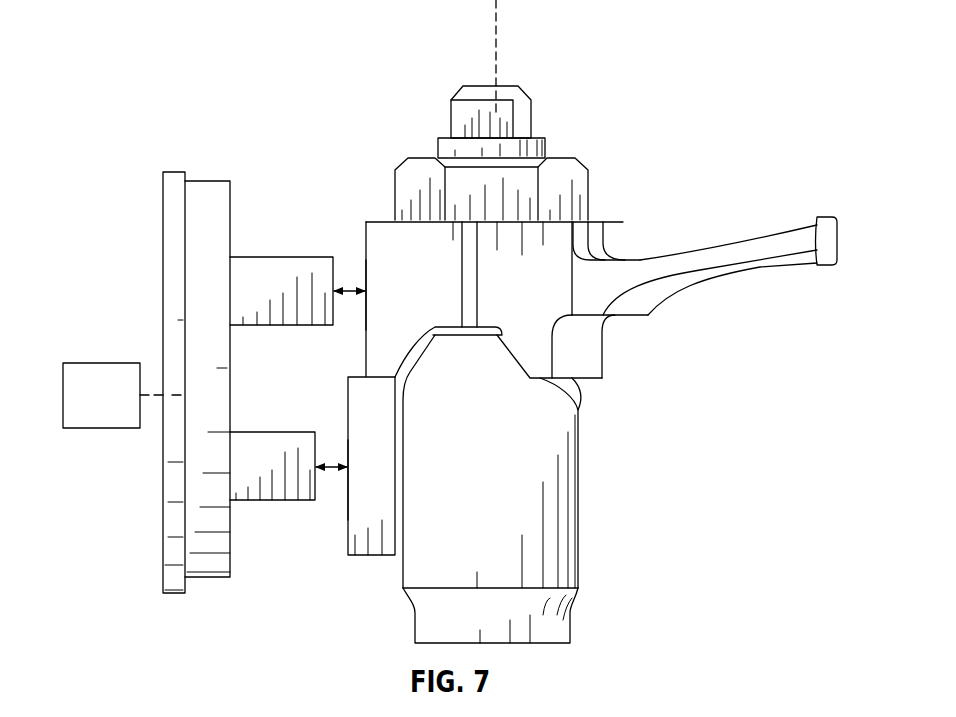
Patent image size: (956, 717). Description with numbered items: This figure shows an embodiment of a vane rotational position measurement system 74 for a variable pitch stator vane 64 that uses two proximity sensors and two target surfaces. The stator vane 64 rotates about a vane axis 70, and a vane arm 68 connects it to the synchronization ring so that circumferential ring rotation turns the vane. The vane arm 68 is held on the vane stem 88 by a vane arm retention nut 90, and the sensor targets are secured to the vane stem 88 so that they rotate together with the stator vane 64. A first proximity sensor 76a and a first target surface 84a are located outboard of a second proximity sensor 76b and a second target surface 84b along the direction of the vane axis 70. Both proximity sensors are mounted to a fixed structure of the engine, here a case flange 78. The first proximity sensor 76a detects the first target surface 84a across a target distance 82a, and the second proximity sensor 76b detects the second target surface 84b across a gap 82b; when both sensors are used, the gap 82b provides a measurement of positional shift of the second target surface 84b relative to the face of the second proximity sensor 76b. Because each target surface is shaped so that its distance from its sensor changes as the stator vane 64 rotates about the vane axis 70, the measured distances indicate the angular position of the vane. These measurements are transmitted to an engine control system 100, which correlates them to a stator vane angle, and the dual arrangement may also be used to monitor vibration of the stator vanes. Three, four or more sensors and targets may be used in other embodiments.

The stator vane 64 is at (570, 543).
The vane arm 68 is at (733, 255).
The vane axis 70 is at (496, 38).
The position measurement system 74 is at (309, 171).
The first proximity sensor 76a is at (290, 277).
The second proximity sensor 76b is at (273, 447).
The case flange 78 is at (172, 580).
The target distance 82a is at (350, 286).
The gap 82b is at (333, 463).
The first target surface 84a is at (365, 330).
The second target surface 84b is at (345, 515).
The vane stem 88 is at (507, 120).
The vane arm retention nut 90 is at (580, 182).
The engine control system 100 is at (92, 378).